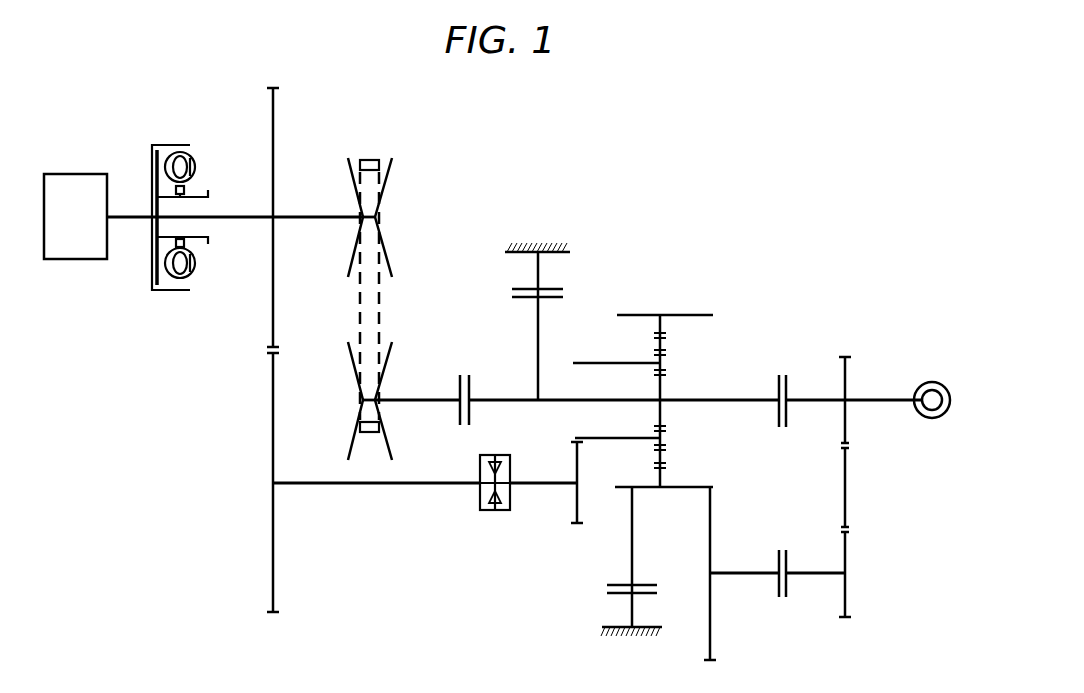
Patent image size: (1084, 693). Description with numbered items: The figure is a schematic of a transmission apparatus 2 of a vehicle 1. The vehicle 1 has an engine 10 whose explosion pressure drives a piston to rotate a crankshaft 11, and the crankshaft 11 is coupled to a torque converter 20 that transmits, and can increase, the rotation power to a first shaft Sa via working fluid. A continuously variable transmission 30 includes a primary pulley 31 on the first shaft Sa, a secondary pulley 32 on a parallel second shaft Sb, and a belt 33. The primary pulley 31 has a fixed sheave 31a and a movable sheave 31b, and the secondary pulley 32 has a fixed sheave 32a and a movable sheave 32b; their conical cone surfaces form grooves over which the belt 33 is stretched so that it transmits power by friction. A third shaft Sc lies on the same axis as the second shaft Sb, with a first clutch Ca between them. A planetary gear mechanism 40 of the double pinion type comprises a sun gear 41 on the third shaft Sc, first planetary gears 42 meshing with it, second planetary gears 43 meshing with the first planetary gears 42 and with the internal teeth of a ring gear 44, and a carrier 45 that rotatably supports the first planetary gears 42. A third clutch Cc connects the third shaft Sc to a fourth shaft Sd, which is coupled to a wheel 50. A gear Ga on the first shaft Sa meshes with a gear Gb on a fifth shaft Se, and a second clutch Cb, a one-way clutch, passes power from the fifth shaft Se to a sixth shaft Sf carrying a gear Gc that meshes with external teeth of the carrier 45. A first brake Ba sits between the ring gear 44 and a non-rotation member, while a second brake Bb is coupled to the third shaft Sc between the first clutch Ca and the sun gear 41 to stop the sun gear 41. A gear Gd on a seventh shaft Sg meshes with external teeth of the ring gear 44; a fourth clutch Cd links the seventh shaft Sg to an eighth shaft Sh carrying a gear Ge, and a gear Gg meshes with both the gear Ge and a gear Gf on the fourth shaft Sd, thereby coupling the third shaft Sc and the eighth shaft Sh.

The vehicle 1 is at (715, 140).
The transmission apparatus 2 is at (746, 200).
The engine 10 is at (63, 230).
The crankshaft 11 is at (127, 214).
The torque converter 20 is at (171, 145).
The continuously variable transmission 30 is at (377, 142).
The primary pulley 31 is at (373, 216).
The fixed sheave 31a is at (348, 264).
The movable sheave 31b is at (390, 181).
The secondary pulley 32 is at (366, 401).
The fixed sheave 32a is at (350, 453).
The movable sheave 32b is at (389, 455).
The belt 33 is at (386, 318).
The planetary gear mechanism 40 is at (649, 443).
The sun gear 41 is at (667, 376).
The first planetary gear 42 is at (667, 430).
The second planetary gear 43 is at (667, 337).
The ring gear 44 is at (622, 490).
The carrier 45 is at (585, 362).
The wheel 50 is at (930, 381).
The first shaft Sa is at (260, 219).
The second shaft Sb is at (424, 398).
The third shaft Sc is at (506, 398).
The fourth shaft Sd is at (887, 398).
The fifth shaft Se is at (312, 486).
The sixth shaft Sf is at (543, 485).
The seventh shaft Sg is at (745, 575).
The eighth shaft Sh is at (816, 575).
The gear Ga is at (273, 308).
The gear Gb is at (273, 411).
The gear Gc is at (577, 460).
The gear Gd is at (710, 535).
The gear Ge is at (848, 552).
The gear Gf is at (848, 432).
The gear Gg is at (848, 488).
The first clutch Ca is at (453, 377).
The second clutch Cb is at (475, 509).
The third clutch Cc is at (773, 376).
The fourth clutch Cd is at (773, 550).
The first brake Ba is at (607, 586).
The second brake Bb is at (511, 289).